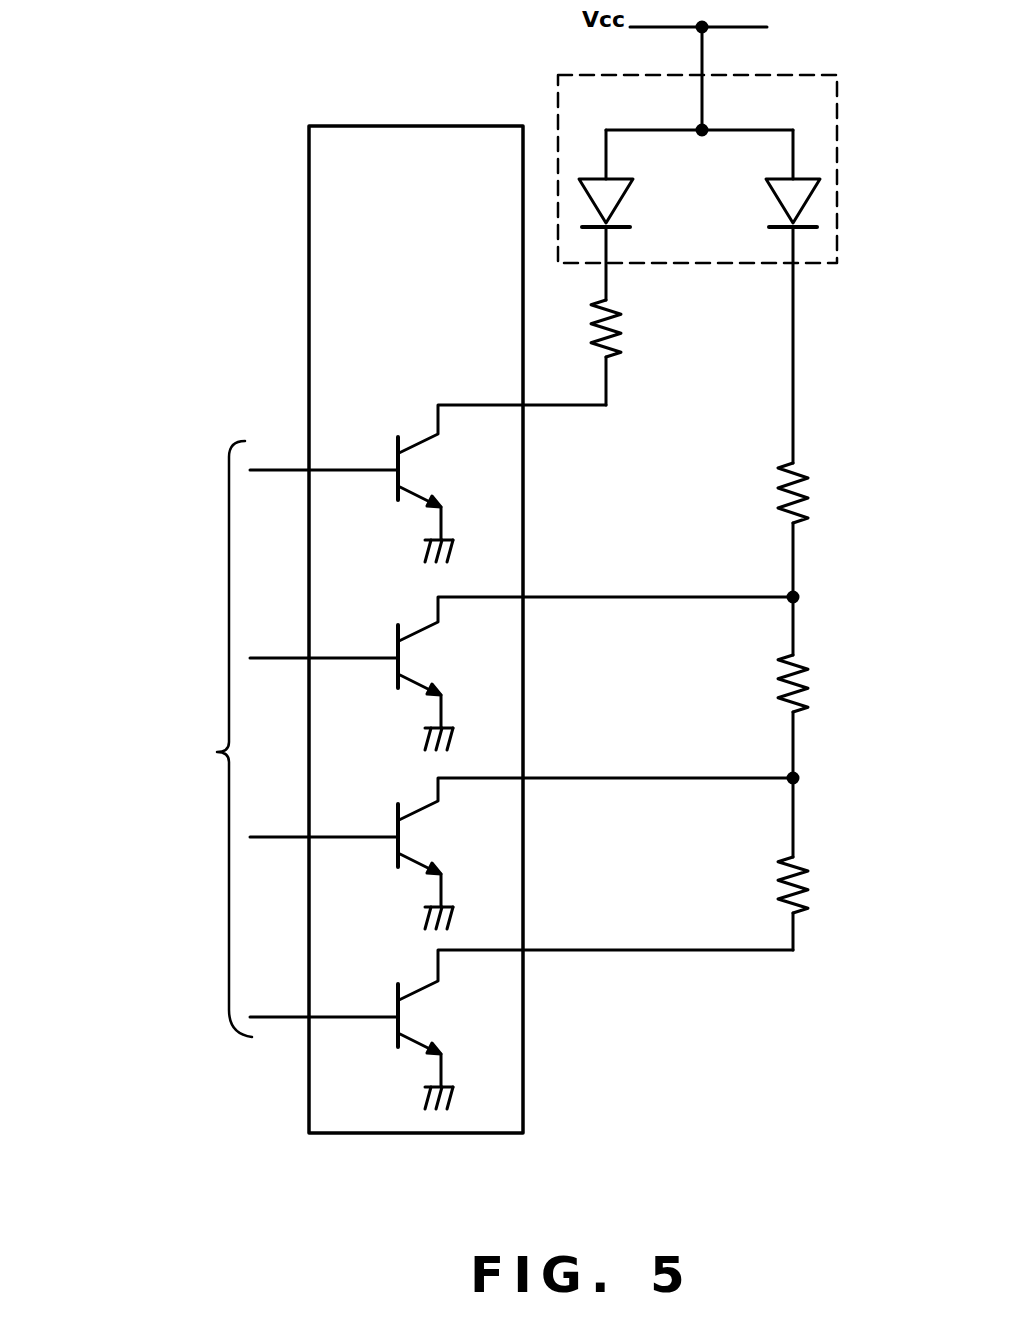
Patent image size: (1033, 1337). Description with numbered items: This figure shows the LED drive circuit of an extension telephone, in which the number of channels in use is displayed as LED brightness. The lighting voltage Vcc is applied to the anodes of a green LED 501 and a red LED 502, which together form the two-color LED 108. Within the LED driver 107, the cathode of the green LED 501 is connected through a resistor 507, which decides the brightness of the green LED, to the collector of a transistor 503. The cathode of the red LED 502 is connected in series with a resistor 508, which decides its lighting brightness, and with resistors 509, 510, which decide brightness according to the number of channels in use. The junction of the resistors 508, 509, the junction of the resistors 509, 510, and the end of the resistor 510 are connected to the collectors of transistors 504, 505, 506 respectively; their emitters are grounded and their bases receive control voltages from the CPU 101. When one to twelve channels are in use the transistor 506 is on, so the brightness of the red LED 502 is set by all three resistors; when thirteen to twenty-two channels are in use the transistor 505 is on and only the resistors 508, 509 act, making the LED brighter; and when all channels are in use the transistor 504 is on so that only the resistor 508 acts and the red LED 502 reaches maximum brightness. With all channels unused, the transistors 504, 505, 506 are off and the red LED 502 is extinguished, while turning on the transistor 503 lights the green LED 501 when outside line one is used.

The CPU 101 is at (153, 739).
The LED driver 107 is at (463, 126).
The two-color LED 108 is at (816, 75).
The green LED 501 is at (618, 200).
The red LED 502 is at (815, 192).
The transistor 503 is at (412, 438).
The transistor 504 is at (412, 618).
The transistor 505 is at (412, 800).
The transistor 506 is at (412, 977).
The resistor 507 is at (624, 318).
The resistor 508 is at (810, 500).
The resistor 509 is at (812, 688).
The resistor 510 is at (812, 888).